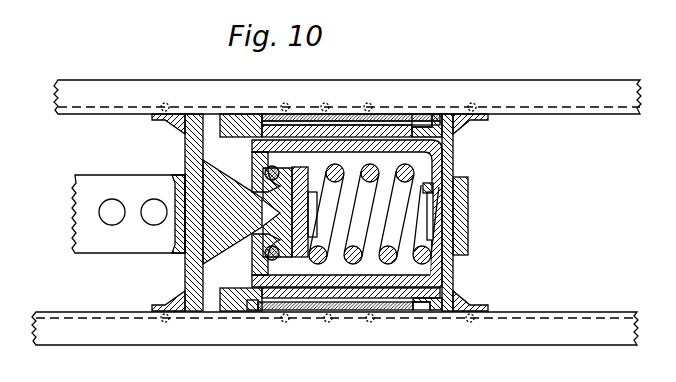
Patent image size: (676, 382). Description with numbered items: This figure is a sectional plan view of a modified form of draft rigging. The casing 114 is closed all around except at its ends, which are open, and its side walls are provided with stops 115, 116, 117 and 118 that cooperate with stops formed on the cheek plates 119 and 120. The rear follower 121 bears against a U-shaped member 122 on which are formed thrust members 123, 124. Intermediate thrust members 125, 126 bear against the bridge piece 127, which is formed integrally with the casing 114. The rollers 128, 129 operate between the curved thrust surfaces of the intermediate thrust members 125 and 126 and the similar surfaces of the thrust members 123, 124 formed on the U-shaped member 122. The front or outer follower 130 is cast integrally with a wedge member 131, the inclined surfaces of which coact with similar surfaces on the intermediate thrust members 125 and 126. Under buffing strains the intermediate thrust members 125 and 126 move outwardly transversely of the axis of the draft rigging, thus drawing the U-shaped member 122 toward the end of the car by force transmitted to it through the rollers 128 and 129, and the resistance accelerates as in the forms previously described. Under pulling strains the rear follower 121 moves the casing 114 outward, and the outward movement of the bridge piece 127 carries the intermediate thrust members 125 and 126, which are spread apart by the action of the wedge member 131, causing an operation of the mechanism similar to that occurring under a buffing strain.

The casing 114 is at (379, 130).
The stop 115 is at (243, 122).
The stop 116 is at (437, 119).
The stop 117 is at (233, 313).
The stop 118 is at (438, 310).
The cheek plate 119 is at (312, 114).
The cheek plate 120 is at (351, 312).
The rear follower 121 is at (453, 163).
The U-shaped member 122 is at (455, 270).
The thrust member 123 is at (262, 126).
The thrust member 124 is at (256, 310).
The intermediate thrust member 125 is at (262, 179).
The intermediate thrust member 126 is at (262, 233).
The bridge piece 127 is at (308, 208).
The roller 128 is at (336, 174).
The roller 129 is at (290, 266).
The front follower 130 is at (185, 153).
The wedge member 131 is at (232, 212).